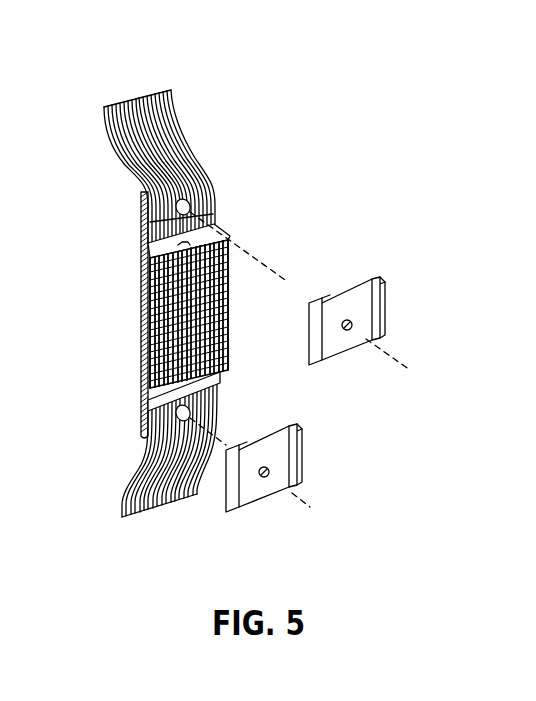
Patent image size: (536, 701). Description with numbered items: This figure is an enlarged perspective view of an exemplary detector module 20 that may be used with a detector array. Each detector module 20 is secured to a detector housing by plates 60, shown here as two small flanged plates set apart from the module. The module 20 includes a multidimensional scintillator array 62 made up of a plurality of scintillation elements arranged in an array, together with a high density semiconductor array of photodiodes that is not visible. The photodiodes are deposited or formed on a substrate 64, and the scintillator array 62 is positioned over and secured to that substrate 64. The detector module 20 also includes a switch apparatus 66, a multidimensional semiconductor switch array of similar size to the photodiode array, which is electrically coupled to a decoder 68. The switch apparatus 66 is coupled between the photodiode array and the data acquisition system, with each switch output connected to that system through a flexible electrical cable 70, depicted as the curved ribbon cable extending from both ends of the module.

The detector module 20 is at (306, 72).
The plates 60 is at (386, 313).
The multidimensional scintillator array 62 is at (230, 332).
The substrate 64 is at (142, 326).
The switch apparatus 66 is at (146, 243).
The decoder 68 is at (147, 258).
The flexible electrical cable 70 is at (193, 140).